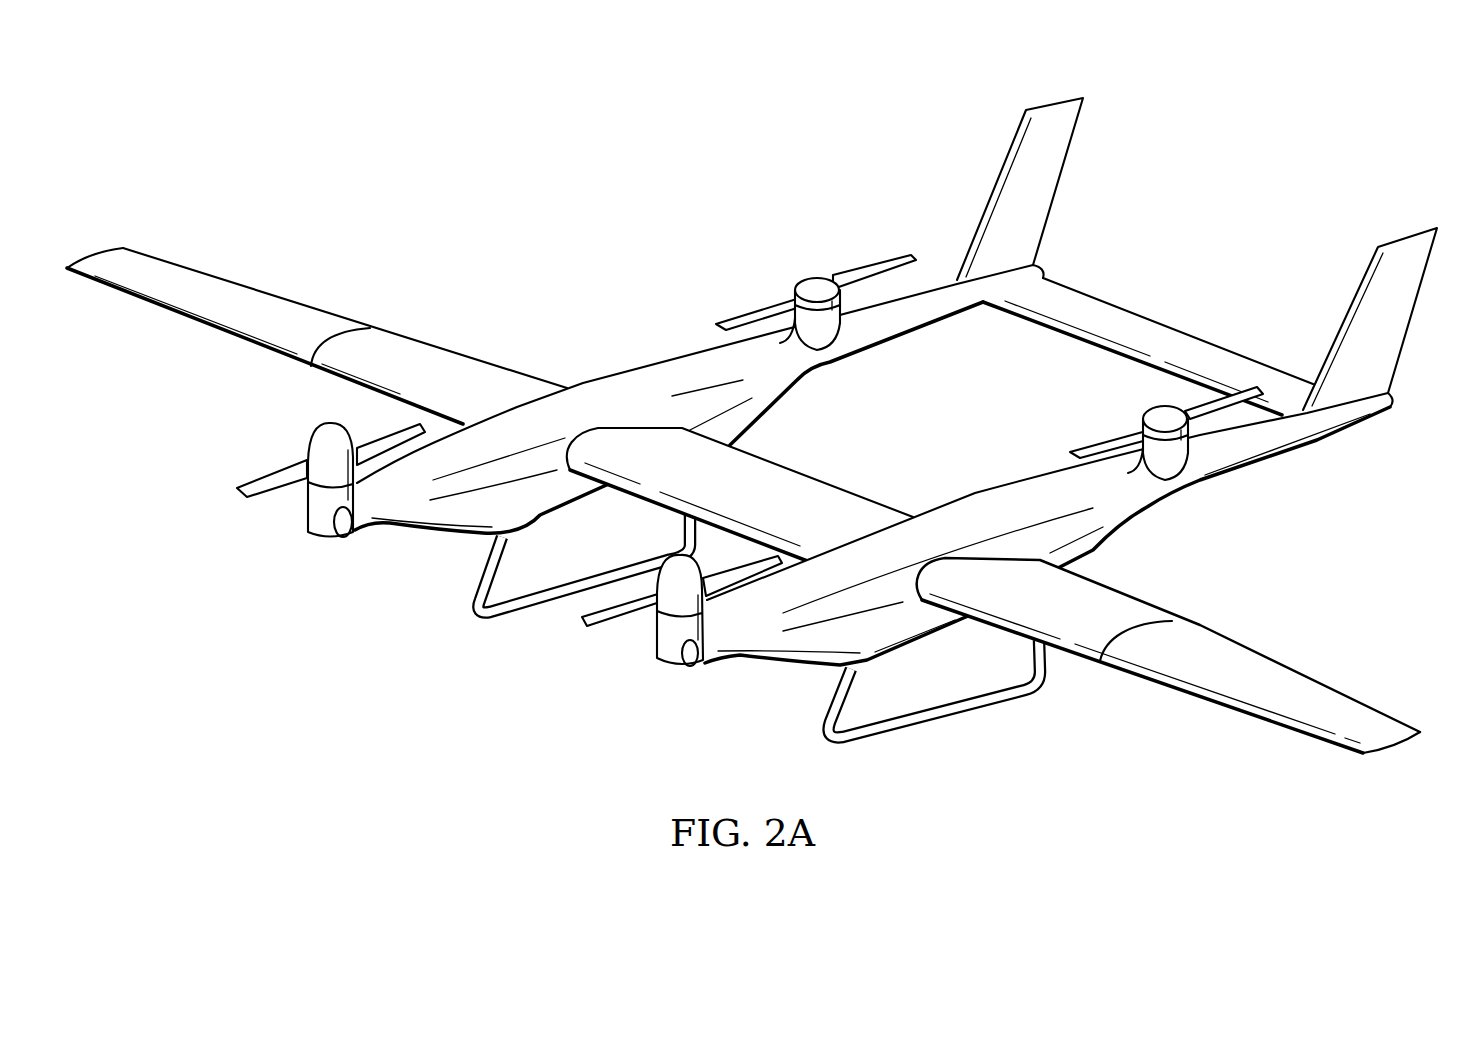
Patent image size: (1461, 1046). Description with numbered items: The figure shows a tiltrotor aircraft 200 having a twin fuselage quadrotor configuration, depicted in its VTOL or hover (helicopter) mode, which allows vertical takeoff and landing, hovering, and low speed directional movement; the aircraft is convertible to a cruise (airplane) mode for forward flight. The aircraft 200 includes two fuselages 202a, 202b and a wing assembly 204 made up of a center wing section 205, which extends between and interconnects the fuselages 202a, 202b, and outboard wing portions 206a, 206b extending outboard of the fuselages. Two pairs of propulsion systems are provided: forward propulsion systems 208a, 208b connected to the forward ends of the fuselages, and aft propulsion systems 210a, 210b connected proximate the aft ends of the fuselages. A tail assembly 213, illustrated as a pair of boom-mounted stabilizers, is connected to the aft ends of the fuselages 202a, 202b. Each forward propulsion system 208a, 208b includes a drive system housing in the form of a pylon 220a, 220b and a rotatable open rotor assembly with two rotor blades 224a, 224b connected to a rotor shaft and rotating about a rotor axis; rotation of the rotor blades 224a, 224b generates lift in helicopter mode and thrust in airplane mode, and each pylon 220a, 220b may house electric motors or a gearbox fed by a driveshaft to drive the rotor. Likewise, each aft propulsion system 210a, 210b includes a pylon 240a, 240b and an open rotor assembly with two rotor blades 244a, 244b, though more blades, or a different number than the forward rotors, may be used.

The tiltrotor aircraft 200 is at (752, 418).
The fuselage 202a is at (620, 368).
The fuselage 202b is at (977, 496).
The wing assembly 204 is at (804, 454).
The center wing section 205 is at (850, 501).
The outboard wing portion 206a is at (415, 351).
The outboard wing portion 206b is at (1142, 621).
The forward propulsion system 208a is at (312, 470).
The forward propulsion system 208b is at (665, 638).
The aft propulsion system 210a is at (831, 292).
The aft propulsion system 210b is at (1162, 411).
The tail assembly 213 is at (1249, 212).
The pylon 220a is at (310, 521).
The pylon 220b is at (653, 644).
The rotor blades 224a is at (247, 483).
The rotor blades 224b is at (603, 609).
The pylon 240a is at (830, 324).
The pylon 240b is at (1182, 453).
The rotor blades 244a is at (866, 268).
The rotor blades 244b is at (1242, 392).